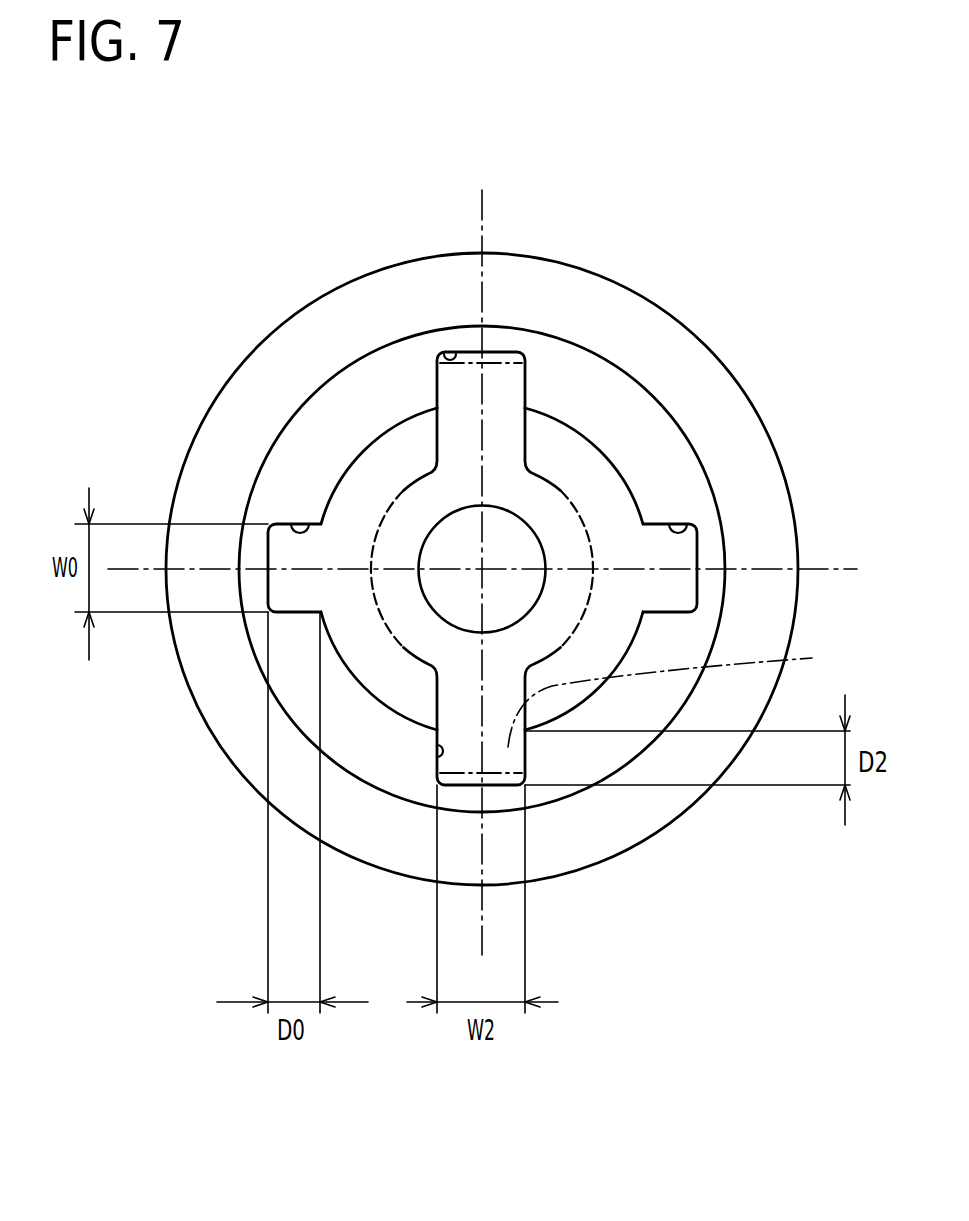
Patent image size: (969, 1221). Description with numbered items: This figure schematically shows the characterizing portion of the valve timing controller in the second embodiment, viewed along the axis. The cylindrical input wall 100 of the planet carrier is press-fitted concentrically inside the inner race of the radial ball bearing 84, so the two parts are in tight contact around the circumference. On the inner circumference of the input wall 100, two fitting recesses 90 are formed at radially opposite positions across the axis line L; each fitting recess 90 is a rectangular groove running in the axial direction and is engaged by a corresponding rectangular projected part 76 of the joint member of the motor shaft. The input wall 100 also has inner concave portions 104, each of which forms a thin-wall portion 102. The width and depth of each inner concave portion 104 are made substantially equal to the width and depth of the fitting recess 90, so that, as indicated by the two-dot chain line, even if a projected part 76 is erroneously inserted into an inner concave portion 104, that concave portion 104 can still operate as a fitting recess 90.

The projected part 76 is at (497, 375).
The radial ball bearing 84 is at (317, 330).
The fitting recess 90 is at (290, 523).
The input wall 100 is at (315, 422).
The thin-wall portion 102 is at (498, 335).
The inner concave portion 104 is at (442, 357).
The axis L is at (826, 571).